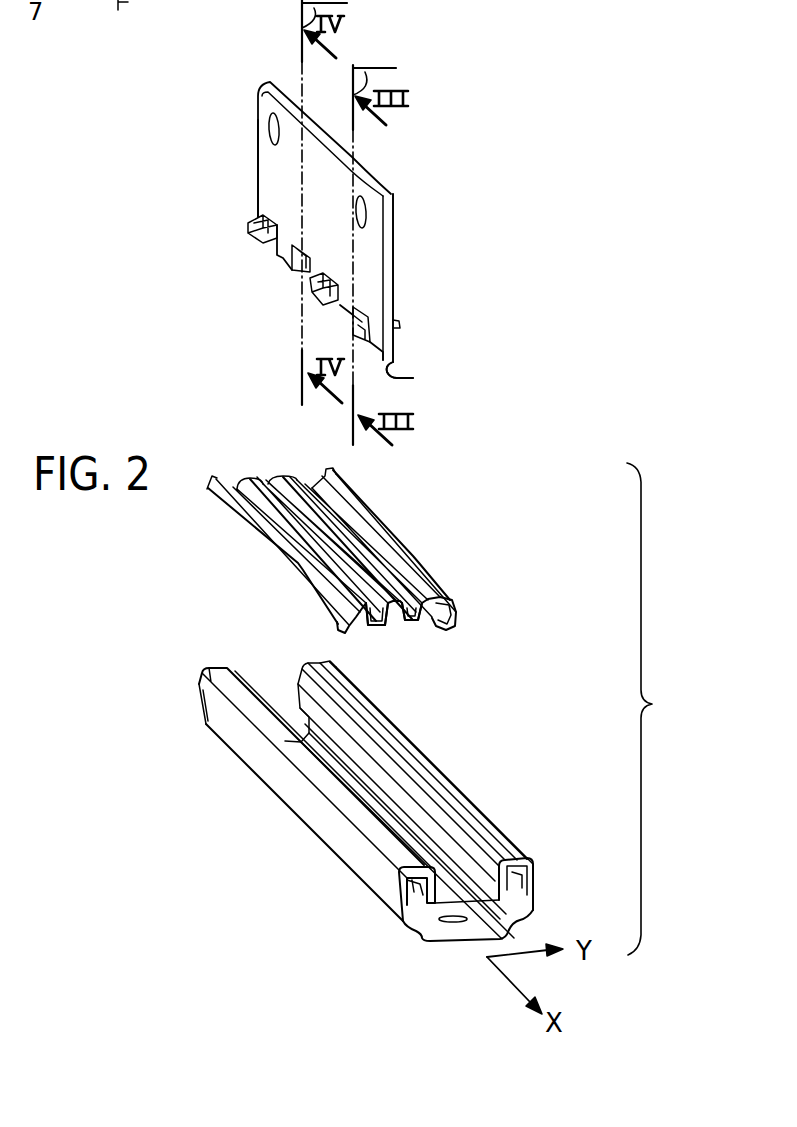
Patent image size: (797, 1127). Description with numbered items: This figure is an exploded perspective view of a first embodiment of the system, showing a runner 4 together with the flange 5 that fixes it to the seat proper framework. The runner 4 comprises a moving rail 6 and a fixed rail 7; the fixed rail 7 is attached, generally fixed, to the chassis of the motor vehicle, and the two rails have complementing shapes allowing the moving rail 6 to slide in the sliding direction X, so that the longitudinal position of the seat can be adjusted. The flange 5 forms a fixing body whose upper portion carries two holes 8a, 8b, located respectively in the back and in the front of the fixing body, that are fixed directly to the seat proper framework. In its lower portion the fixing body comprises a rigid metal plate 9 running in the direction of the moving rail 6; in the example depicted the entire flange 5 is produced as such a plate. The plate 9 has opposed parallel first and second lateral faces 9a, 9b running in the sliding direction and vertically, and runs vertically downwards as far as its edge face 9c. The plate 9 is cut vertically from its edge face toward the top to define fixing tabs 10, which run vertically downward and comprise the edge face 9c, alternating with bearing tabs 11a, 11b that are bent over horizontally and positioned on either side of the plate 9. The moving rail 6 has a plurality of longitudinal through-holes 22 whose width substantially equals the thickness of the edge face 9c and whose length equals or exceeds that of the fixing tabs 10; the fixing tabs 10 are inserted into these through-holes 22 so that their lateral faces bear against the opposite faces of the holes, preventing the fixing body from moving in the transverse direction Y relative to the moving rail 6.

The runner 4 is at (650, 709).
The flange 5 is at (338, 230).
The moving rail 6 is at (292, 512).
The fixed rail 7 is at (447, 776).
The hole 8a is at (262, 131).
The hole 8b is at (367, 220).
The plate 9 is at (329, 231).
The first lateral face 9a is at (270, 198).
The second lateral face 9b is at (395, 275).
The edge face 9c is at (410, 380).
The fixing tabs 10 is at (372, 342).
The bearing tab 11a is at (250, 237).
The bearing tab 11b is at (401, 323).
The through-holes 22 is at (395, 620).